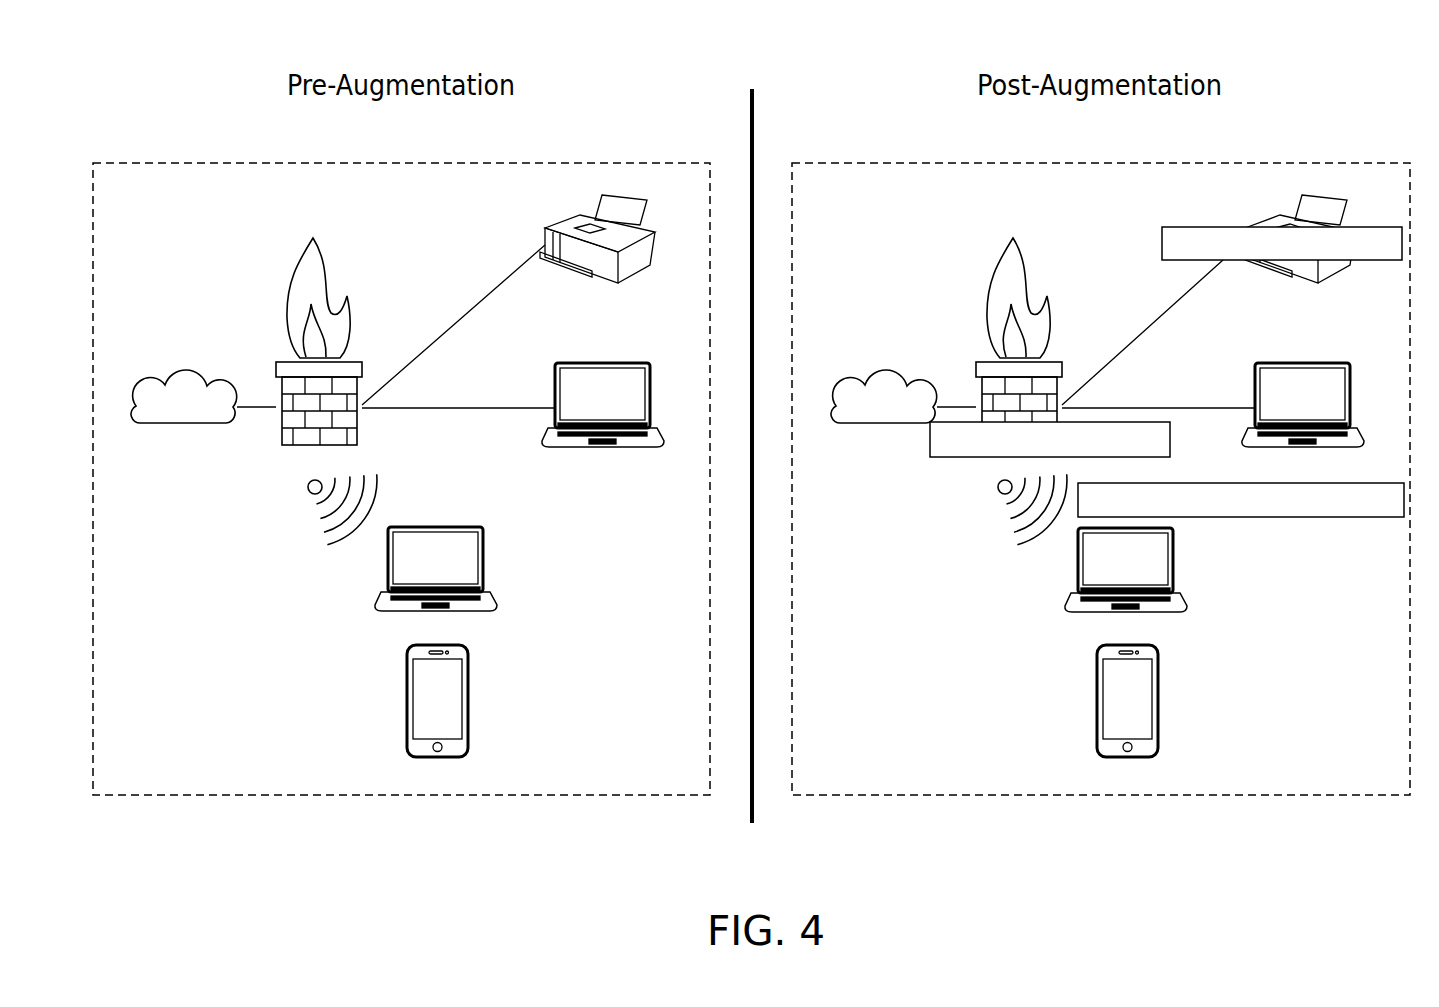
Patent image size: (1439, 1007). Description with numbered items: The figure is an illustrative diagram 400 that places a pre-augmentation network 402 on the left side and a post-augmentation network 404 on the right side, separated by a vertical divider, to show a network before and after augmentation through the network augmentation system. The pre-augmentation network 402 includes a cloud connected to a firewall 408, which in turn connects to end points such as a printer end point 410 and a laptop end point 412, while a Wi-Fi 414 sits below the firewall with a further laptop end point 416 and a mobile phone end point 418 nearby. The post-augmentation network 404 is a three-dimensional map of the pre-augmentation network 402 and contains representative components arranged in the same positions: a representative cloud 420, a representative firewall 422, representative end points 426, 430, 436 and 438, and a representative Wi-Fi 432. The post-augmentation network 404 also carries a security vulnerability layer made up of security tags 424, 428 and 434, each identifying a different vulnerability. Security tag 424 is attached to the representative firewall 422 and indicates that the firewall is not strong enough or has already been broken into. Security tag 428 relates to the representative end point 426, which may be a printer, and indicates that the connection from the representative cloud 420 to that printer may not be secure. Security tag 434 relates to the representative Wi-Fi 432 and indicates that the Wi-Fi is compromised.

The illustrative diagram 400 is at (182, 368).
The pre-augmentation network 402 is at (565, 163).
The post-augmentation network 404 is at (1267, 163).
The firewall 408 is at (292, 297).
The end point 410 is at (593, 215).
The end point 412 is at (602, 363).
The Wi-Fi 414 is at (308, 513).
The end point 416 is at (488, 563).
The end point 418 is at (470, 700).
The representative cloud 420 is at (882, 368).
The representative firewall 422 is at (992, 297).
The security tag 424 is at (930, 443).
The representative end point 426 is at (1291, 215).
The security tag 428 is at (1162, 245).
The representative end point 430 is at (1300, 363).
The representative Wi-Fi 432 is at (998, 513).
The security tag 434 is at (1298, 517).
The representative end point 436 is at (1178, 563).
The representative end point 438 is at (1160, 700).